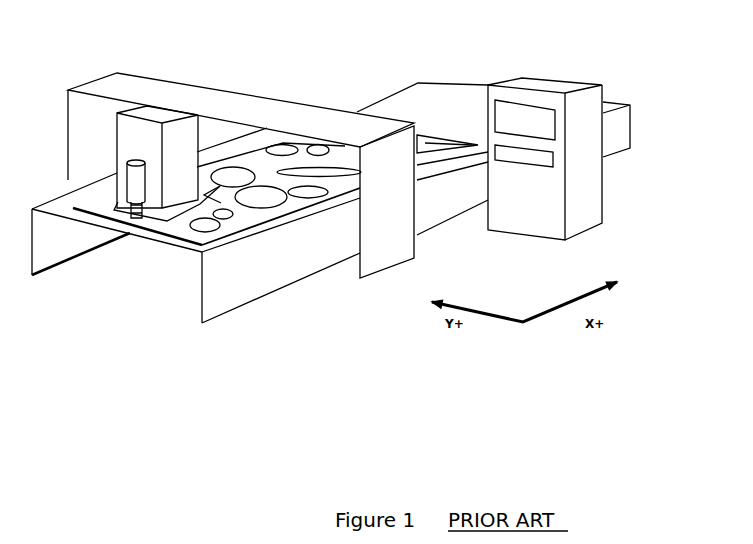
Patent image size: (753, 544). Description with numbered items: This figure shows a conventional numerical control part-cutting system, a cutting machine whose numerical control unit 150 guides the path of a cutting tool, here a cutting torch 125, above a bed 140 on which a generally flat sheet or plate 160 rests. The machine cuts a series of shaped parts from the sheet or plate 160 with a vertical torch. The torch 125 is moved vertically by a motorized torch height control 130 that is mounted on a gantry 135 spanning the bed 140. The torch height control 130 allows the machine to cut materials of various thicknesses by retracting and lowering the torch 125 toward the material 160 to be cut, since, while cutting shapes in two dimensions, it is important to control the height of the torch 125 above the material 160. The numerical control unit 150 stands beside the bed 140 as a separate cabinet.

The cutting torch 125 is at (124, 197).
The torch height control 130 is at (127, 146).
The gantry 135 is at (148, 98).
The bed 140 is at (377, 102).
The numerical control unit 150 is at (600, 213).
The sheet or plate 160 is at (238, 217).